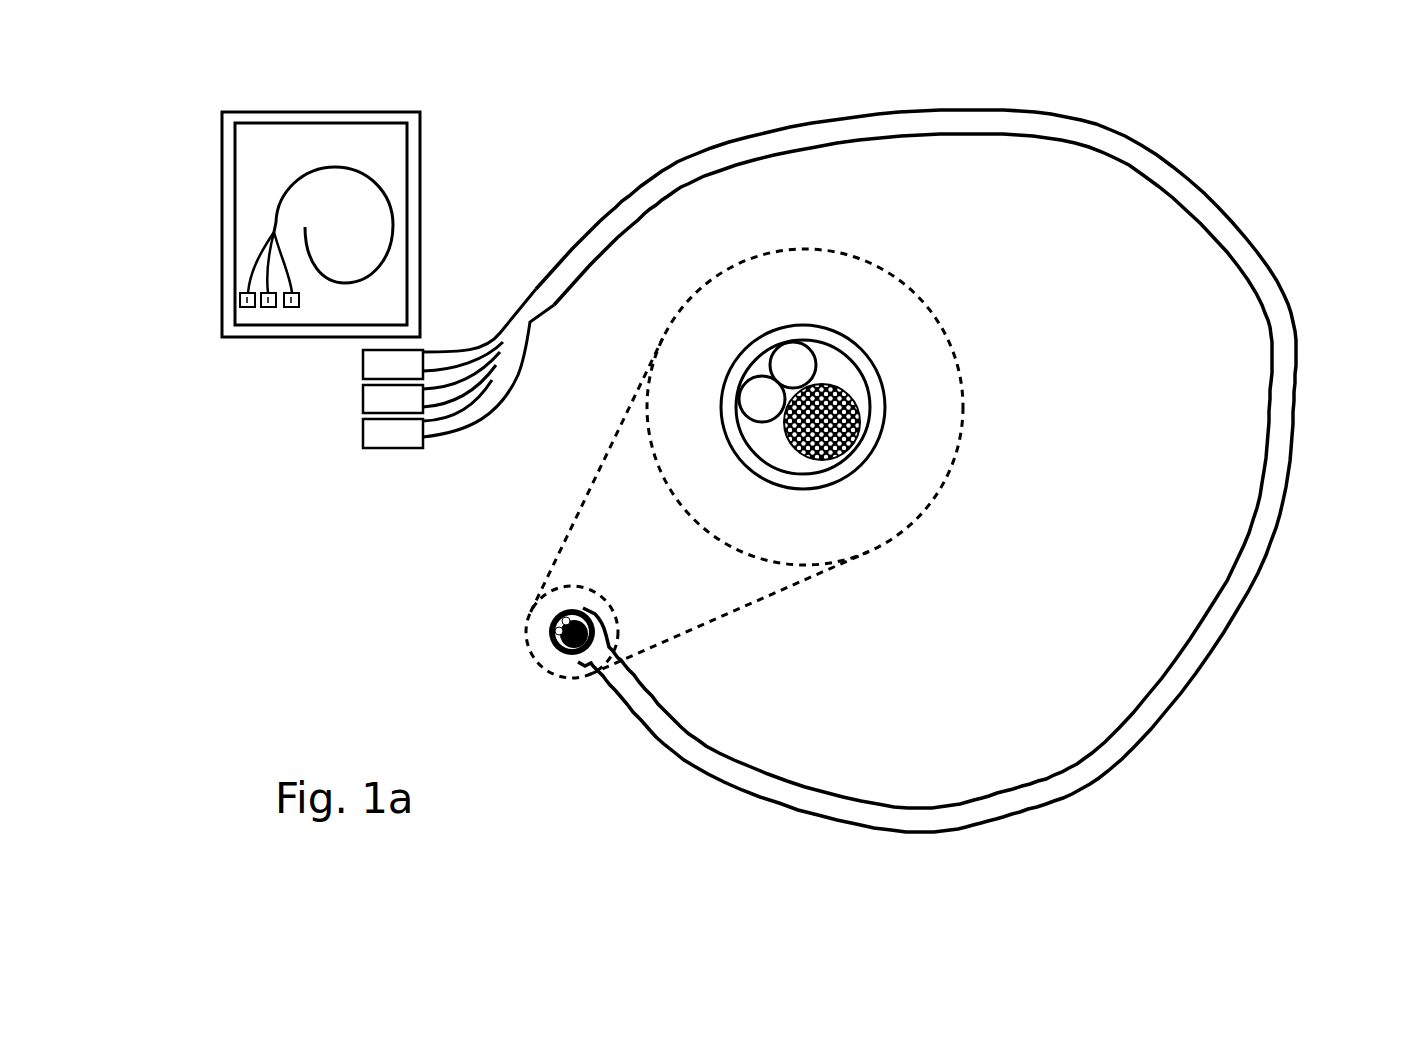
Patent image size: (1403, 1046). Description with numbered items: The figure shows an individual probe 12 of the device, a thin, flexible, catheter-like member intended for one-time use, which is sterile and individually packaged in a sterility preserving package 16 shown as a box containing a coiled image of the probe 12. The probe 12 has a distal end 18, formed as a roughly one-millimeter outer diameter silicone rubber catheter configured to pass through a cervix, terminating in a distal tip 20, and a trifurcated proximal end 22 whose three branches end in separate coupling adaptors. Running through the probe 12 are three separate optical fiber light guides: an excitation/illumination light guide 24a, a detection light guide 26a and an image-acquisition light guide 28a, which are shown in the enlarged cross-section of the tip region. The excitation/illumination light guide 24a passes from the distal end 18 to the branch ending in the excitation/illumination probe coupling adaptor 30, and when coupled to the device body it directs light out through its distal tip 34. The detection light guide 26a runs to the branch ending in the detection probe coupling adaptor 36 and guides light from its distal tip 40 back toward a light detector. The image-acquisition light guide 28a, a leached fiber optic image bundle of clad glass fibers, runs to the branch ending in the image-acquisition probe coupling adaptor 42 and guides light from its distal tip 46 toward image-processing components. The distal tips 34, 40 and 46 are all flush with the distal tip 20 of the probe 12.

The probe 12 is at (383, 207).
The sterility preserving package 16 is at (421, 148).
The distal end 18 is at (708, 774).
The distal tip 20 is at (568, 658).
The trifurcated proximal end 22 is at (450, 438).
The excitation/illumination light guide 24a is at (818, 345).
The detection light guide 26a is at (755, 422).
The image-acquisition light guide 28a is at (853, 390).
The excitation/illumination probe coupling adaptor 30 is at (363, 357).
The distal tip of excitation/illumination light guide 34 is at (795, 358).
The detection probe coupling adaptor 36 is at (363, 397).
The distal tip of detection light guide 40 is at (760, 398).
The image-acquisition probe coupling adaptor 42 is at (363, 433).
The distal tip of image-acquisition light guide 46 is at (855, 442).